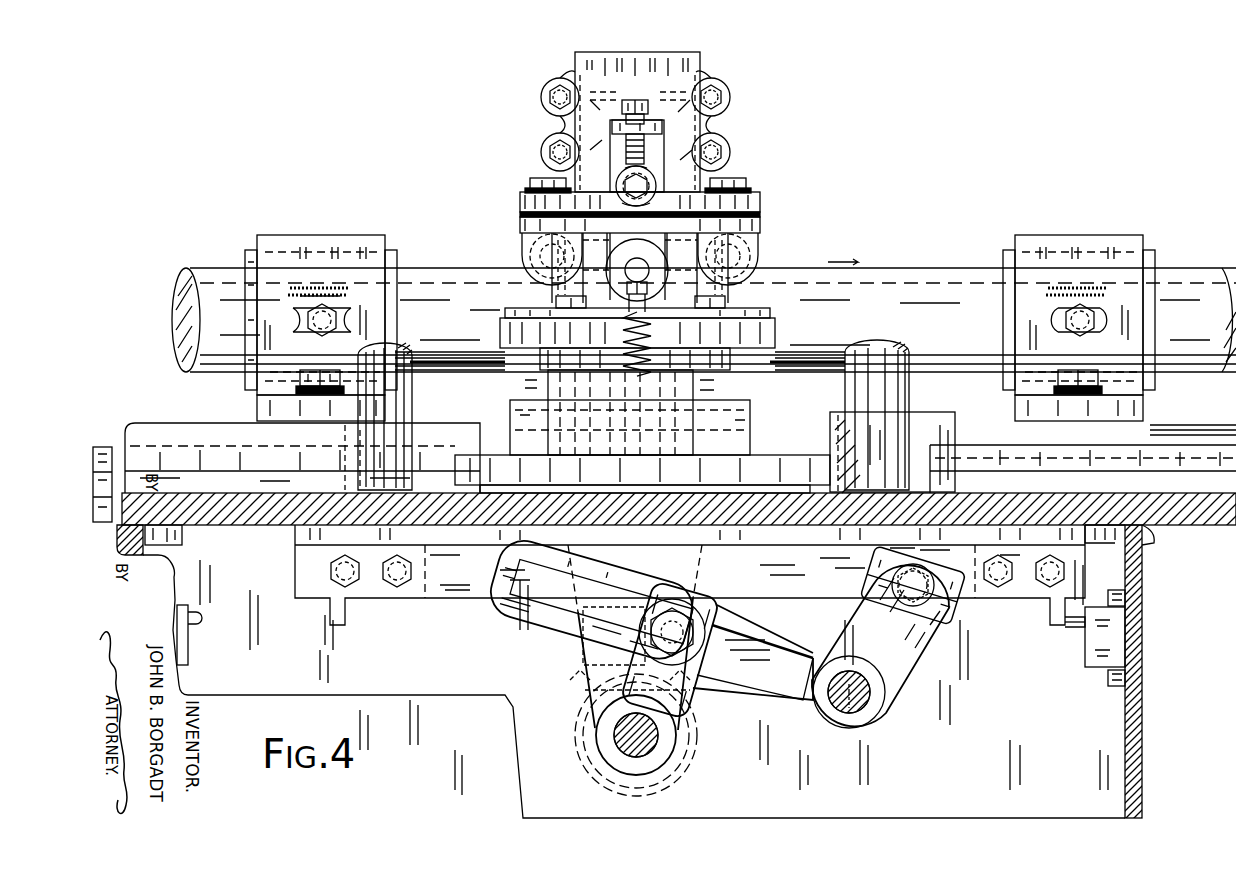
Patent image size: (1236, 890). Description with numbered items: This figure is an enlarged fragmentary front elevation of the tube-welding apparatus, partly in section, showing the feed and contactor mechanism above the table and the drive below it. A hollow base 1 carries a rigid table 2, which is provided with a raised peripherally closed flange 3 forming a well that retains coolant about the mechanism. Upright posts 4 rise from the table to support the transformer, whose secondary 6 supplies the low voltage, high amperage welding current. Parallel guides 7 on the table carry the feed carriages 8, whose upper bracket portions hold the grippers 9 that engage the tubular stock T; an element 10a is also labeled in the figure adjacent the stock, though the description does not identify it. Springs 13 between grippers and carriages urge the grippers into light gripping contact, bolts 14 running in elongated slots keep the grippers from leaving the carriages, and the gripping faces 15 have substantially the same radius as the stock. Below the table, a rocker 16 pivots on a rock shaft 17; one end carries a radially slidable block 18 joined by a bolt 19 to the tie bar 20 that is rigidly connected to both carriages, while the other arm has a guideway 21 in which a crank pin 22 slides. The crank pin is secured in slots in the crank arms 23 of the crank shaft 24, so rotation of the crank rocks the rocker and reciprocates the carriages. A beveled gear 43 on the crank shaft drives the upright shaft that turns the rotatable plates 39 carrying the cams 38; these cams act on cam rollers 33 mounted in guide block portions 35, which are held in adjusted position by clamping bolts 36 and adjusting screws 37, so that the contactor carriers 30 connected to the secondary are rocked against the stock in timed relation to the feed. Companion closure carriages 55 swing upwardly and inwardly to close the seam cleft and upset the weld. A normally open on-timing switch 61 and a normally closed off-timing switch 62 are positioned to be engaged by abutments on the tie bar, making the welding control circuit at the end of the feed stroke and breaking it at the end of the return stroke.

The hollow base 1 is at (1138, 655).
The table 2 is at (1168, 524).
The flange 3 is at (832, 418).
The upright posts 4 is at (408, 400).
The secondary 6 is at (702, 60).
The guides 7 is at (122, 438).
The feed carriages 8 is at (385, 333).
The grippers 9 is at (246, 254).
The shaft 10a is at (904, 272).
The springs 13 is at (294, 306).
The bolts 14 is at (322, 332).
The gripping faces 15 is at (256, 383).
The rocker 16 is at (903, 686).
The rock shaft 17 is at (846, 722).
The radially slidable block 18 is at (944, 628).
The bolt 19 is at (921, 580).
The tie bar 20 is at (690, 604).
The guideway 21 is at (758, 708).
The crank pin 22 is at (682, 632).
The crank arms 23 is at (690, 706).
The crank shaft 24 is at (625, 740).
The contactor carriers 30 is at (716, 125).
The cam rollers 33 is at (738, 304).
The guide block portions 35 is at (668, 165).
The clamping bolts 36 is at (620, 183).
The adjusting screws 37 is at (650, 100).
The cams 38 is at (504, 310).
The rotatable plates 39 is at (776, 331).
The beveled gear 43 is at (678, 782).
The closure carriages 55 is at (722, 386).
The on-timing switch 61 is at (1086, 646).
The off-timing switch 62 is at (190, 648).
The tubular stock T is at (1186, 259).